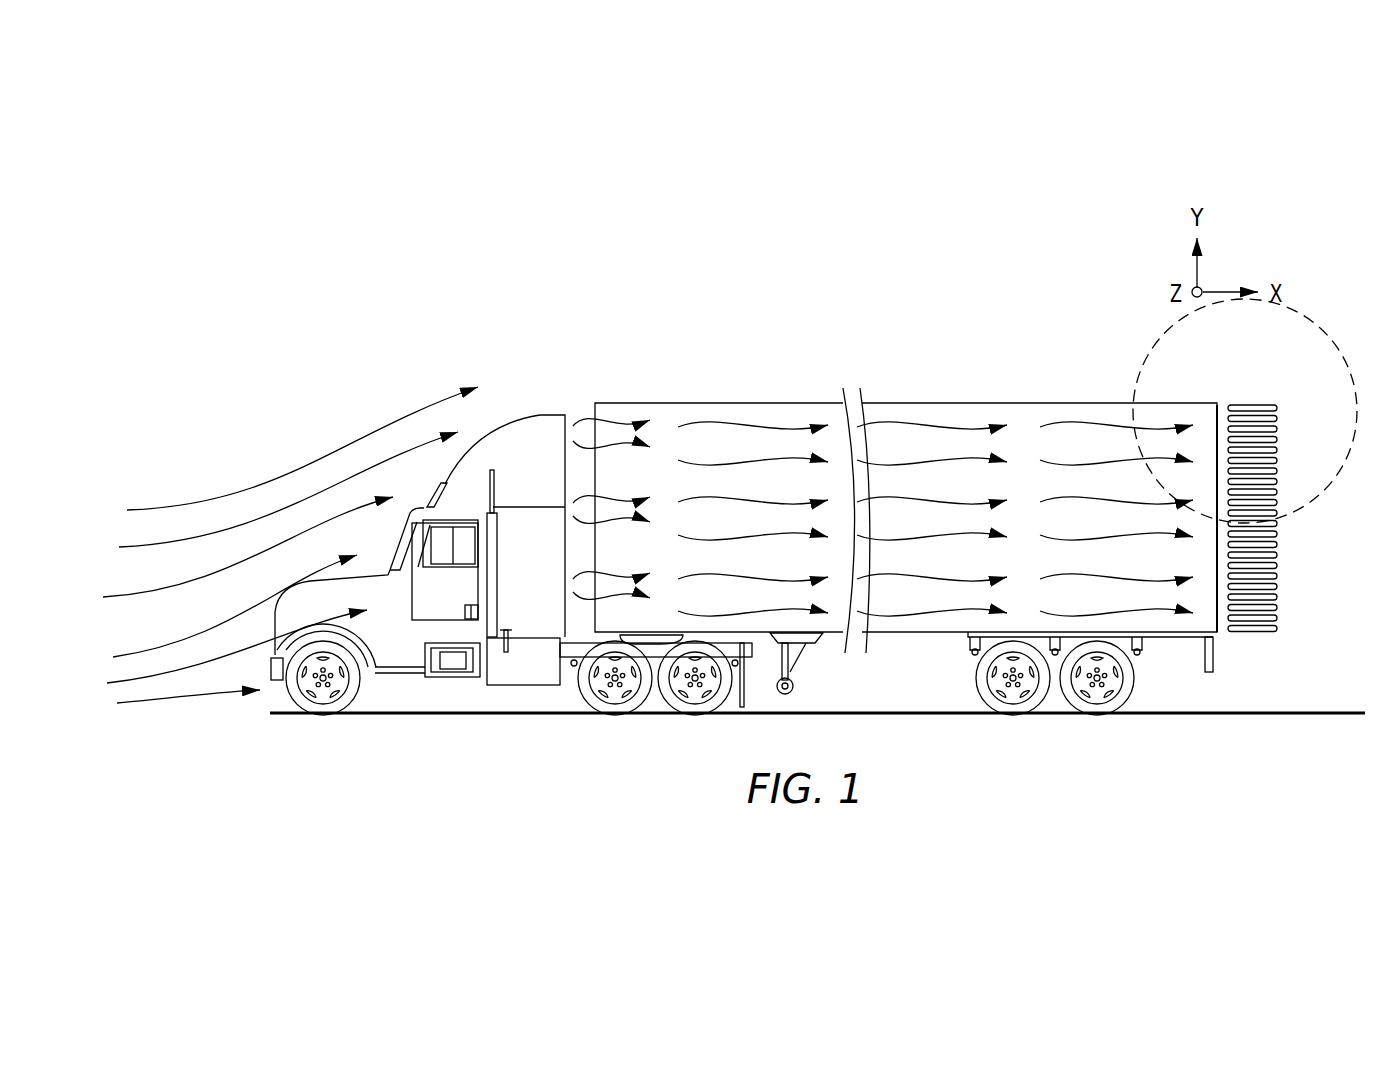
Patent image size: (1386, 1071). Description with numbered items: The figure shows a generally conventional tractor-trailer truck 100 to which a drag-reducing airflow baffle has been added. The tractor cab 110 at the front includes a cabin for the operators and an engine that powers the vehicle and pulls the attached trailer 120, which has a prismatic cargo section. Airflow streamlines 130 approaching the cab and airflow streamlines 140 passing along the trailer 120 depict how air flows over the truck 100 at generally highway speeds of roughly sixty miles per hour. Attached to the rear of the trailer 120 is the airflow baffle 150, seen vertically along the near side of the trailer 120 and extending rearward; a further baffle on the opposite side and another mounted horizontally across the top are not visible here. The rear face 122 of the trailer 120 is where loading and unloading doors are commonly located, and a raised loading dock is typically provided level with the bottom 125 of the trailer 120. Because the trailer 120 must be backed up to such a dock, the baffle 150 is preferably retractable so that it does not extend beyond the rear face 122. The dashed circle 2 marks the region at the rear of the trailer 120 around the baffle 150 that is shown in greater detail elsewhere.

The tractor-trailer truck 100 is at (346, 302).
The tractor cab 110 is at (527, 372).
The trailer 120 is at (657, 393).
The rear face 122 is at (1232, 413).
The bottom 125 is at (1178, 662).
The airflow streamlines 130 is at (218, 498).
The airflow streamlines 140 is at (948, 420).
The airflow baffle 150 is at (1278, 470).
The detail view circle (FIG. 2) 2 is at (1156, 344).